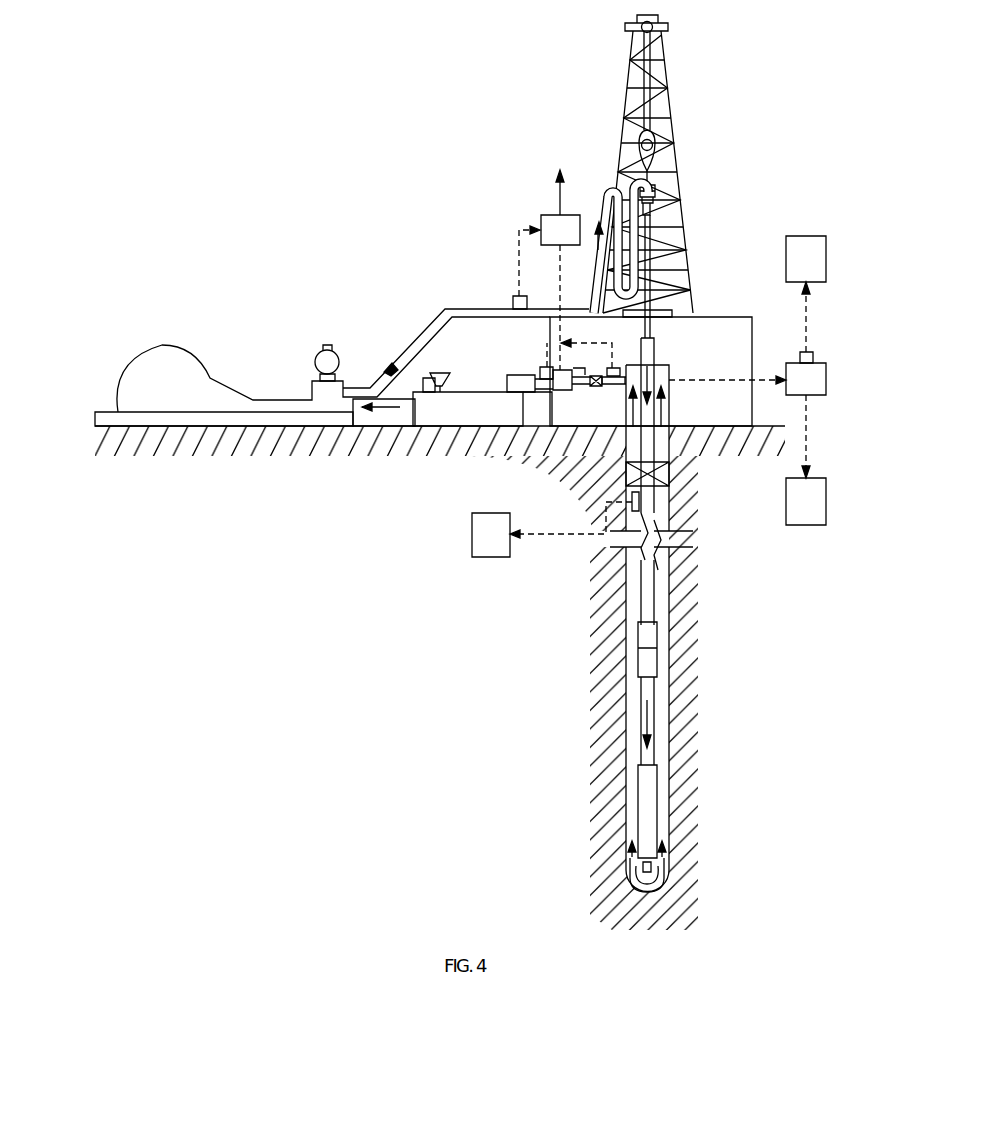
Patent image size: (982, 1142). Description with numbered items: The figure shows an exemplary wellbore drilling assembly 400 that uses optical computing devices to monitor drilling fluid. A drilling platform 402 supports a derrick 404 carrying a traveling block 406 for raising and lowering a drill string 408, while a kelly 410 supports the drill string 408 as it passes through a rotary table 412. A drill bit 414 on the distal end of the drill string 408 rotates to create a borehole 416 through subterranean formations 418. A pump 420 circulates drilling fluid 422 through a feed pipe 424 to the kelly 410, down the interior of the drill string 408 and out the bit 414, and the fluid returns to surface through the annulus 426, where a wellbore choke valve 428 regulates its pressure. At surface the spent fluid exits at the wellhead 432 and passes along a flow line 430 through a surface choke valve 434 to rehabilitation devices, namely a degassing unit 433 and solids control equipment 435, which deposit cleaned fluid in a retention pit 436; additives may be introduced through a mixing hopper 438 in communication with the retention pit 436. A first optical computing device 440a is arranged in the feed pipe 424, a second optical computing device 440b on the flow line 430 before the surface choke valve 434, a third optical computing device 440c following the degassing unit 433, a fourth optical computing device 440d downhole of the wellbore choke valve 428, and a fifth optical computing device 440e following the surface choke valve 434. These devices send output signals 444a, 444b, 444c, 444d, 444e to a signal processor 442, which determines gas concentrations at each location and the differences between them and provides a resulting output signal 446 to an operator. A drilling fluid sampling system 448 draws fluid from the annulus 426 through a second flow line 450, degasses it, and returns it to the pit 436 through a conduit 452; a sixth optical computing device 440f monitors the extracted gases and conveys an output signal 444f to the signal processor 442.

The wellbore drilling assembly 400 is at (411, 85).
The drilling platform 402 is at (753, 322).
The derrick 404 is at (679, 94).
The traveling block 406 is at (659, 133).
The drill string 408 is at (660, 513).
The kelly 410 is at (653, 243).
The rotary table 412 is at (675, 310).
The drill bit 414 is at (668, 872).
The borehole 416 is at (668, 588).
The subterranean formations 418 is at (531, 666).
The pump 420 is at (177, 395).
The drilling fluid 422 is at (362, 389).
The feed pipe 424 is at (445, 308).
The annulus 426 is at (668, 724).
The wellbore choke valve 428 is at (669, 473).
The flow line 430 is at (626, 448).
The wellhead 432 is at (660, 360).
The degassing unit 433 is at (558, 430).
The surface choke valve 434 is at (598, 388).
The solids control equipment 435 is at (508, 376).
The retention pit 436 is at (480, 418).
The mixing hopper 438 is at (428, 396).
The first optical computing device 440a is at (512, 298).
The second optical computing device 440b is at (608, 369).
The third optical computing device 440c is at (546, 366).
The fourth optical computing device 440d is at (655, 501).
The fifth optical computing device 440e is at (620, 386).
The sixth optical computing device 440f is at (801, 356).
The signal processor 442 is at (574, 240).
The first output signal 444a is at (518, 240).
The second output signal 444b is at (592, 342).
The third output signal 444c is at (545, 341).
The fourth output signal 444d is at (548, 536).
The fifth output signal 444e is at (562, 343).
The sixth output signal 444f is at (809, 305).
The resulting output signal 446 is at (552, 200).
The drilling fluid sampling system 448 is at (820, 389).
The second flow line 450 is at (735, 379).
The conduit 452 is at (808, 440).